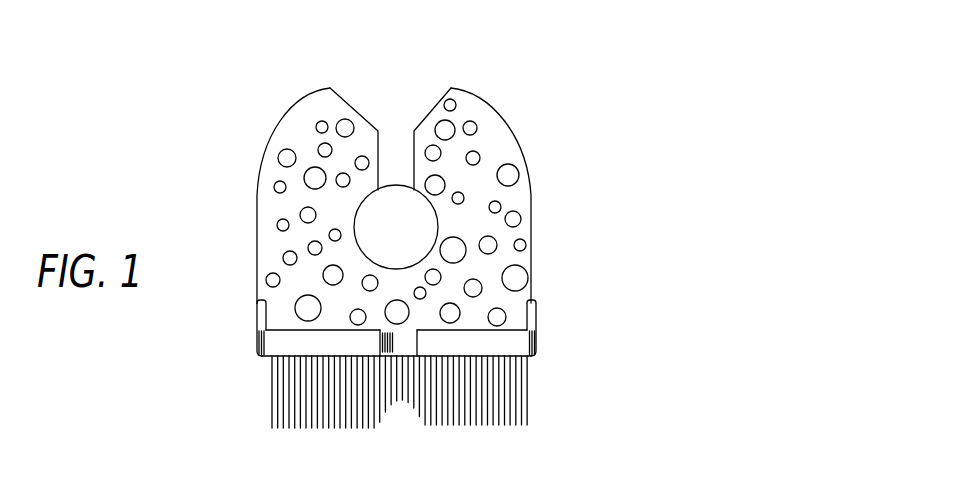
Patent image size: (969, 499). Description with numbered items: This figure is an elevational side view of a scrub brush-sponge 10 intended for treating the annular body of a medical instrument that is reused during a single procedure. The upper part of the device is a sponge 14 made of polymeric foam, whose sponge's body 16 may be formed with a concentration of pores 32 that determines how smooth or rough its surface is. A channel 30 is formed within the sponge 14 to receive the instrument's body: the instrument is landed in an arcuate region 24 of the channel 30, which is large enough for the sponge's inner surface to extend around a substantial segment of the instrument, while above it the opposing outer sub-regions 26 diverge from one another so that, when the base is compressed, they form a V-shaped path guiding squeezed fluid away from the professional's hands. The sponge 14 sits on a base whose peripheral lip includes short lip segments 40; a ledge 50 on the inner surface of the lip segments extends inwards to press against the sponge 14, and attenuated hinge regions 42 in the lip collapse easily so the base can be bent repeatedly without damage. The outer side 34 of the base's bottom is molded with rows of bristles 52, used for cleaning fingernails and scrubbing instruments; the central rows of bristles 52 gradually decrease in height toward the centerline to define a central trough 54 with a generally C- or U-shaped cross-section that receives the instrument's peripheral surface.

The scrub brush-sponge 10 is at (497, 87).
The sponge 14 is at (277, 118).
The sponge's body 16 is at (531, 198).
The arcuate region 24 is at (410, 237).
The outer sub-region 26 is at (343, 100).
The channel 30 is at (355, 213).
The pores 32 is at (479, 153).
The outer side 34 is at (267, 360).
The short lip segment 40 is at (536, 345).
The hinge region 42 is at (403, 345).
The ledge 50 is at (533, 312).
The bristles 52 is at (287, 407).
The central trough 54 is at (423, 420).